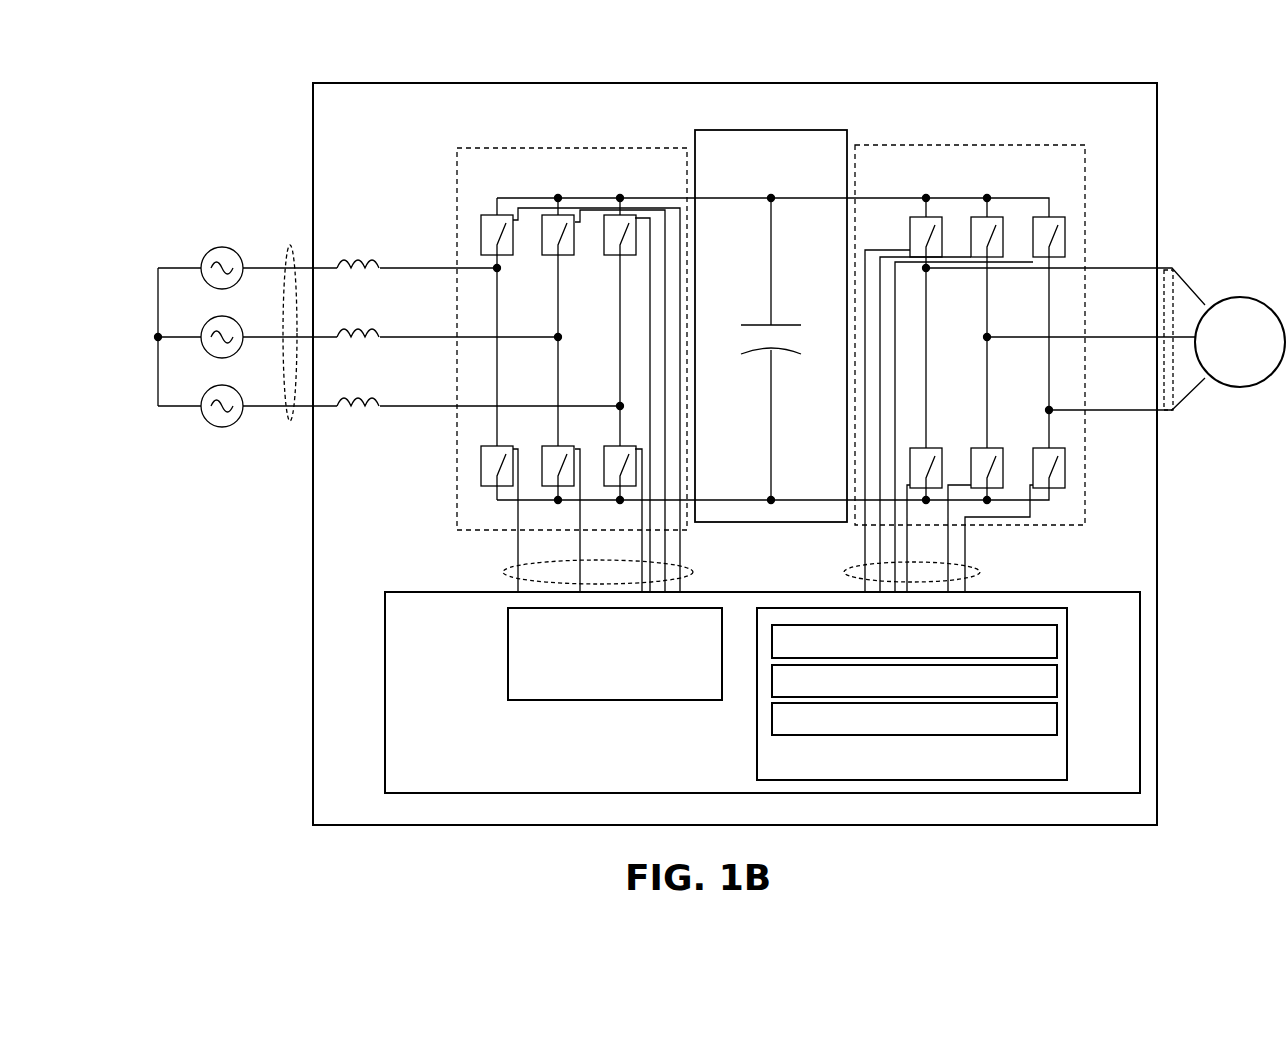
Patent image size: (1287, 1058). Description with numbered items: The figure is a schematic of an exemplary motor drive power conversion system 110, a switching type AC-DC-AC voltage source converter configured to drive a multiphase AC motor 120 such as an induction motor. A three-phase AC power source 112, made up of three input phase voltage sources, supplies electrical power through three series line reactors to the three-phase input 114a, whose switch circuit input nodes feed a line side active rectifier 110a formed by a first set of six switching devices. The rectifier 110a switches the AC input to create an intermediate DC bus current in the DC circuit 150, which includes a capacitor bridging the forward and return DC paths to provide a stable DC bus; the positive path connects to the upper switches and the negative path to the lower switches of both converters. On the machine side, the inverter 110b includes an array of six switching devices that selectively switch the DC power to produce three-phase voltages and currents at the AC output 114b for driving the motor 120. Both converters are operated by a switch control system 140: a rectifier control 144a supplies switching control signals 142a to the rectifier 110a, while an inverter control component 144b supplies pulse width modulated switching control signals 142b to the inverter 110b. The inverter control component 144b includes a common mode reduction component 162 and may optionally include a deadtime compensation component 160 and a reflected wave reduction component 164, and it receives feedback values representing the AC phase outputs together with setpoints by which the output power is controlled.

The motor drive power conversion system 110 is at (313, 149).
The rectifier 110a is at (456, 167).
The inverter 110b is at (1045, 145).
The AC power source 112 is at (210, 437).
The input 114a is at (290, 260).
The AC output 114b is at (1168, 268).
The AC motor 120 is at (1256, 364).
The switch control system 140 is at (385, 778).
The rectifier switching control signals 142a is at (505, 579).
The inverter switching control signals 142b is at (845, 579).
The rectifier control 144a is at (508, 660).
The inverter control component 144b is at (949, 694).
The DC circuit 150 is at (760, 130).
The deadtime compensation component 160 is at (1057, 644).
The common mode reduction component 162 is at (1057, 682).
The reflected wave reduction component 164 is at (1057, 720).